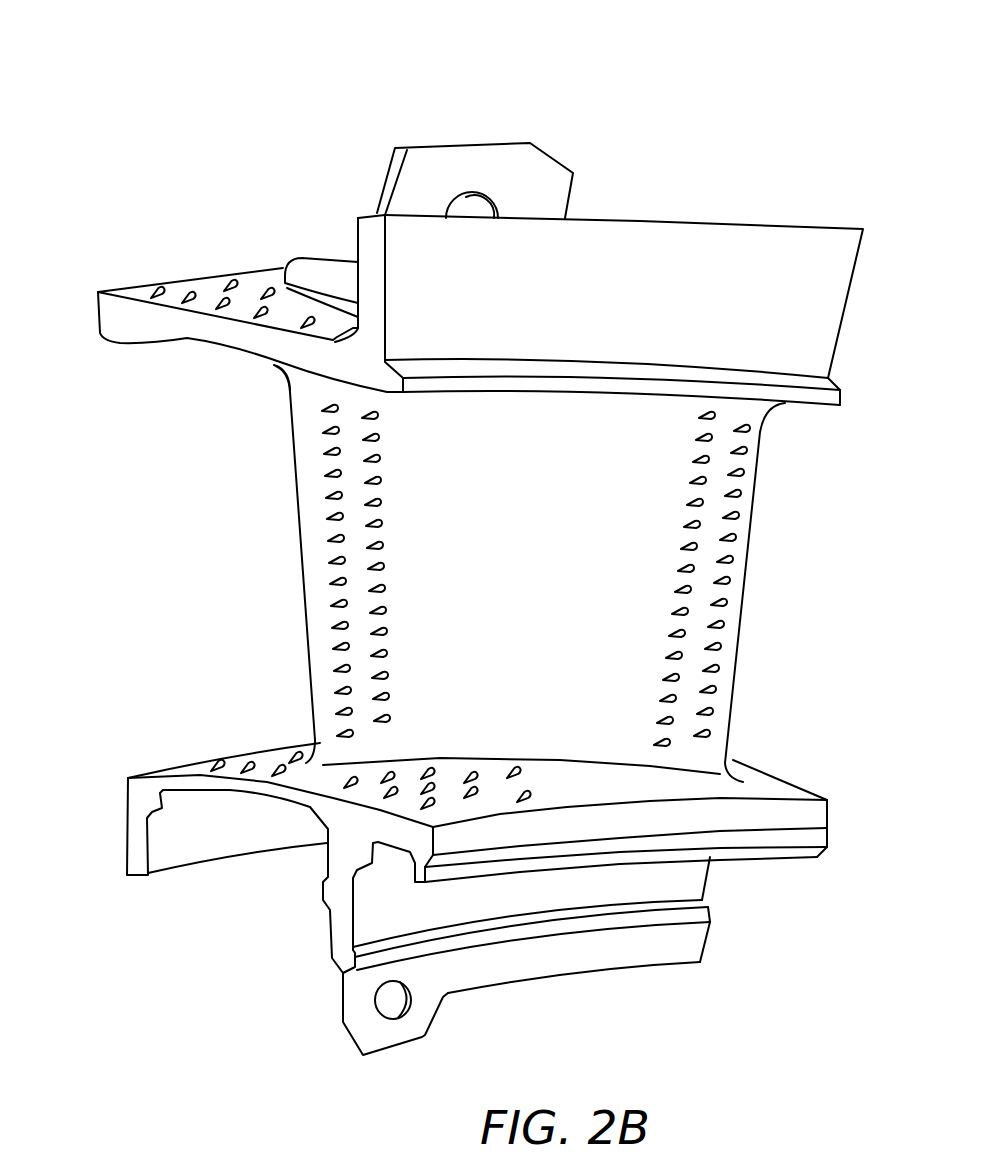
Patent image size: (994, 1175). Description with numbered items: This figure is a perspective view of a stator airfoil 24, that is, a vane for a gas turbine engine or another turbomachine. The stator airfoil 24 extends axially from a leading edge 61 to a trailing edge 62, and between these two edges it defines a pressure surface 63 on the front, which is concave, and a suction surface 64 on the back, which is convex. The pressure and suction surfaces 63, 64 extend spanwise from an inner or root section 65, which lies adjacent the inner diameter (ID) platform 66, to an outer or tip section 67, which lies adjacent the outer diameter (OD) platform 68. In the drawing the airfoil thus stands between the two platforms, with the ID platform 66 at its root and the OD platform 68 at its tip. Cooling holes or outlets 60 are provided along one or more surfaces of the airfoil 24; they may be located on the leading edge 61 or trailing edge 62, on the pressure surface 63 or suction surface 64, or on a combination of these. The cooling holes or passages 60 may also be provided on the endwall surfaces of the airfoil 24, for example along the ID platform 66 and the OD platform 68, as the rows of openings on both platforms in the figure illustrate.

The stator airfoil 24 is at (132, 132).
The cooling holes 60 is at (235, 282).
The leading edge 61 is at (290, 442).
The trailing edge 62 is at (737, 638).
The pressure surface 63 is at (440, 576).
The suction surface 64 is at (748, 570).
The inner section 65 is at (332, 740).
The ID platform 66 is at (853, 798).
The outer section 67 is at (304, 398).
The OD platform 68 is at (113, 325).